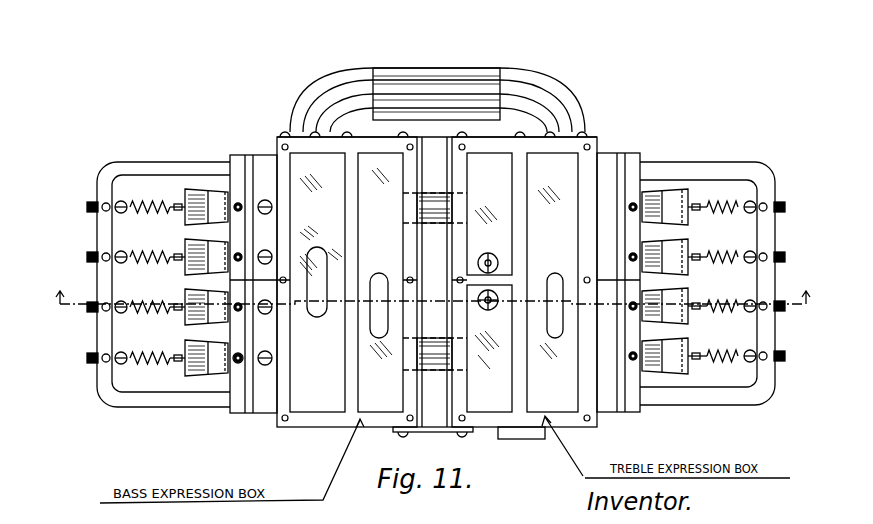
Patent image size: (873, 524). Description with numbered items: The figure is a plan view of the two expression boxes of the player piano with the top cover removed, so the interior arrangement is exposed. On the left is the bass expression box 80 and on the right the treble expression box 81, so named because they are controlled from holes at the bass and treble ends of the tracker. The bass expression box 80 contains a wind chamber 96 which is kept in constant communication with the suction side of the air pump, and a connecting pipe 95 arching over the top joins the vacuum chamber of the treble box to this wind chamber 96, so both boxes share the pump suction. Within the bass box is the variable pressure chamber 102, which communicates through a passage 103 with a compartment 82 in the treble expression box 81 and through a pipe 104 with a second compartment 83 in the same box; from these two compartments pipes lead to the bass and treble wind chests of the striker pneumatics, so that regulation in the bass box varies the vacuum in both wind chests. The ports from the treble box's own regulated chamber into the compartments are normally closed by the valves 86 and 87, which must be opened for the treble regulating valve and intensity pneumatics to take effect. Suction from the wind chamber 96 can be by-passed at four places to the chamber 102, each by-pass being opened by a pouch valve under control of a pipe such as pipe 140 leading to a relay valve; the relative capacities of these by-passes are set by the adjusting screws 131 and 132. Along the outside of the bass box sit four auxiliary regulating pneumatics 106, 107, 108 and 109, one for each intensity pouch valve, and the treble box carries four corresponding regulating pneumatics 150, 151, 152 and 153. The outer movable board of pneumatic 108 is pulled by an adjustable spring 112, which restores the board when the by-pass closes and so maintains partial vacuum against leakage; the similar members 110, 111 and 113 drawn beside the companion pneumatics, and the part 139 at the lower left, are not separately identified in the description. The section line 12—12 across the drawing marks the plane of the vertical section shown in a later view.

The connecting pipe 95 is at (453, 75).
The bass expression box 80 is at (333, 428).
The treble expression box 81 is at (568, 427).
The wind chamber 96 is at (313, 413).
The chamber 102 is at (380, 282).
The compartment 82 is at (489, 282).
The valve 86 is at (487, 253).
The compartment 83 is at (487, 309).
The valve 87 is at (477, 304).
The passage 103 is at (429, 197).
The pipe 104 is at (435, 365).
The pipe 140 is at (239, 306).
The adjusting screw 132 is at (268, 309).
The adjusting screw 131 is at (268, 360).
The screw 139 is at (236, 361).
The regulating pneumatic 106 is at (196, 189).
The regulating pneumatic 107 is at (190, 243).
The regulating pneumatic 108 is at (188, 294).
The regulating pneumatic 109 is at (188, 344).
The spring 110 is at (149, 205).
The spring 111 is at (144, 255).
The adjustable spring 112 is at (144, 303).
The spring 113 is at (146, 354).
The regulating pneumatic 150 is at (690, 194).
The regulating pneumatic 151 is at (692, 244).
The regulating pneumatic 152 is at (692, 298).
The regulating pneumatic 153 is at (694, 348).
The section line 12— 12 is at (433, 291).